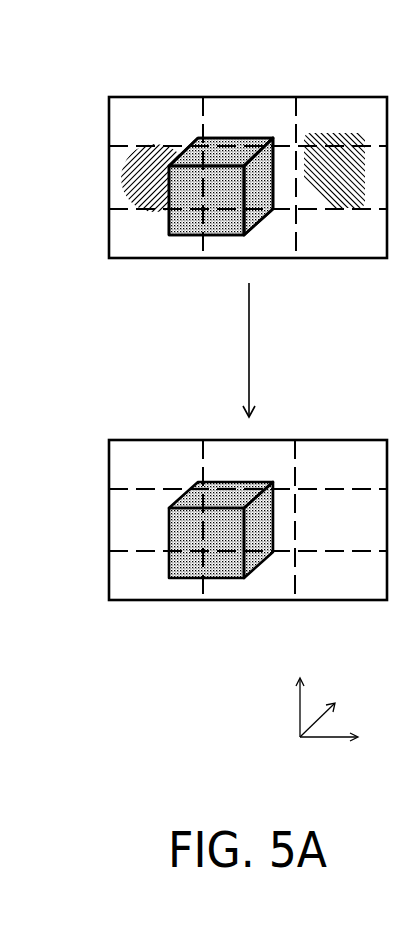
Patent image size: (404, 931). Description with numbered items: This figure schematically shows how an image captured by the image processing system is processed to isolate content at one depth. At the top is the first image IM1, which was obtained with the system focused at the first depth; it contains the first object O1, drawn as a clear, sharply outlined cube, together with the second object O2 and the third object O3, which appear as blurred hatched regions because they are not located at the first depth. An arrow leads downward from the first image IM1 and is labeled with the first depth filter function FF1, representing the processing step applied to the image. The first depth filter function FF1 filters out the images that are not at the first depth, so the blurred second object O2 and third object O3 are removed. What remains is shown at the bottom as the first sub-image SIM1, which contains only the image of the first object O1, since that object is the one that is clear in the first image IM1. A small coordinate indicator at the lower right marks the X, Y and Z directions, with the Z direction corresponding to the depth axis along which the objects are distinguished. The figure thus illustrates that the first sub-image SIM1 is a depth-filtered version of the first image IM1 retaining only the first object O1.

The first image IM1 is at (134, 269).
The first sub-image SIM1 is at (135, 612).
The first object O1 is at (229, 153).
The second object O2 is at (332, 153).
The third object O3 is at (150, 157).
The first depth filter function FF1 is at (250, 348).
The X axis X is at (341, 738).
The Y axis Y is at (300, 690).
The Z axis Z is at (331, 711).